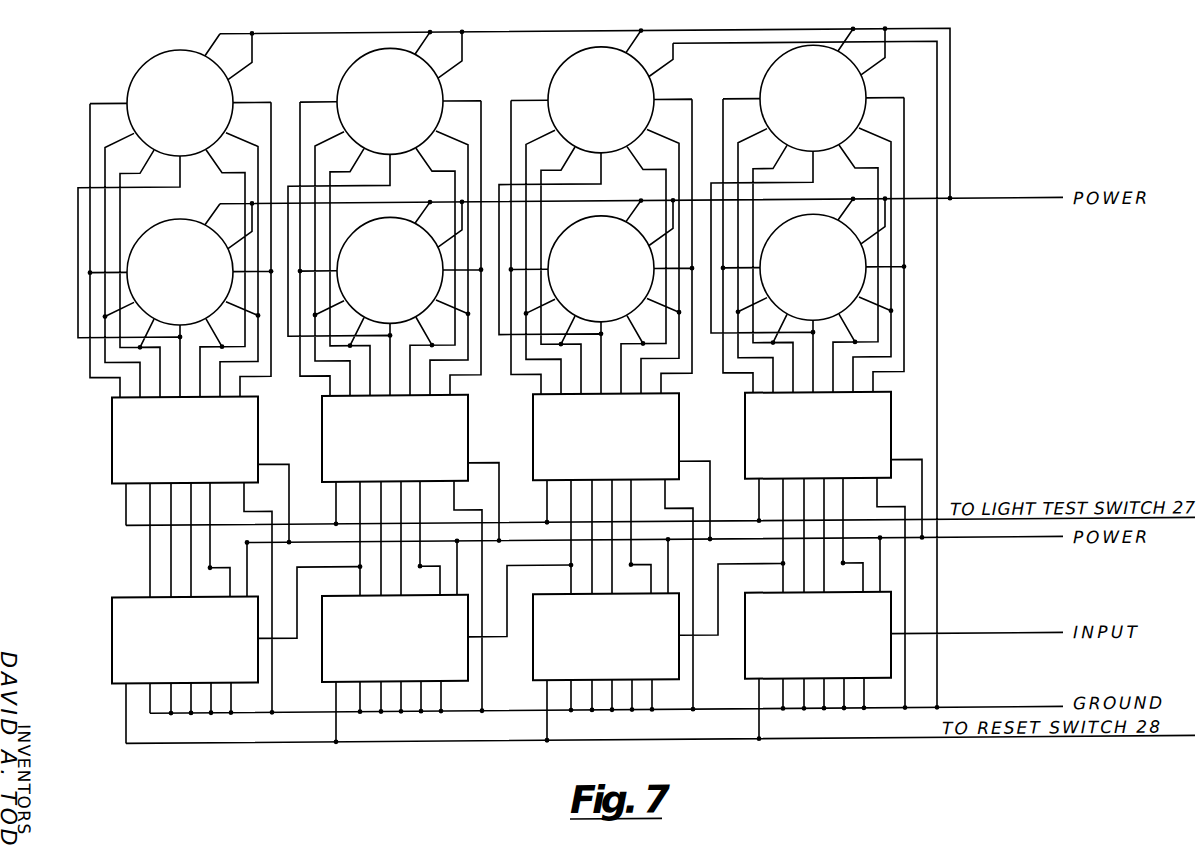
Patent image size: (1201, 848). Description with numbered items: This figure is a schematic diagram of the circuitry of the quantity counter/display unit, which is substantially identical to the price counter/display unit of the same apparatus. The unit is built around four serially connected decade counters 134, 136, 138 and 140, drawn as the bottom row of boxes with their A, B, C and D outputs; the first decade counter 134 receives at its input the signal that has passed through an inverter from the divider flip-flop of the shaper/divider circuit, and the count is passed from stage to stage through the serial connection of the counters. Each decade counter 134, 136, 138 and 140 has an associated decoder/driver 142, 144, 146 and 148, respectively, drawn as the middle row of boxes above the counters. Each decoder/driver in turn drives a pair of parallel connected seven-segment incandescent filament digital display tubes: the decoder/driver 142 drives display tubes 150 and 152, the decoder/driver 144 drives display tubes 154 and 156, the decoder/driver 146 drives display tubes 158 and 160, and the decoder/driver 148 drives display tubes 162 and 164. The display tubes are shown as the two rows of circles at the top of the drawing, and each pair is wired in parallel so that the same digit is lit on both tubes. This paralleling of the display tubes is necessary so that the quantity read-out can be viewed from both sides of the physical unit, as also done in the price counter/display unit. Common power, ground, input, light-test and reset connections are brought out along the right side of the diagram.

The decade counter 134 is at (757, 678).
The decade counter 136 is at (548, 680).
The decade counter 138 is at (337, 679).
The decade counter 140 is at (112, 633).
The decoder/driver 142 is at (745, 434).
The decoder/driver 144 is at (533, 432).
The decoder/driver 146 is at (322, 430).
The decoder/driver 148 is at (112, 429).
The seven-segment incandescent filament digital display tube 150 is at (794, 226).
The seven-segment incandescent filament digital display tube 152 is at (773, 74).
The seven-segment incandescent filament digital display tube 154 is at (589, 226).
The seven-segment incandescent filament digital display tube 156 is at (572, 65).
The seven-segment incandescent filament digital display tube 158 is at (378, 225).
The seven-segment incandescent filament digital display tube 160 is at (359, 62).
The seven-segment incandescent filament digital display tube 162 is at (166, 222).
The seven-segment incandescent filament digital display tube 164 is at (147, 64).